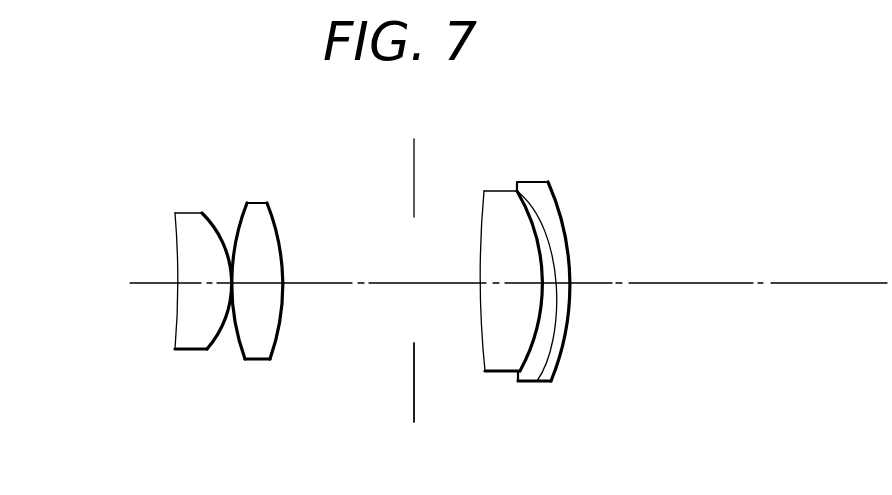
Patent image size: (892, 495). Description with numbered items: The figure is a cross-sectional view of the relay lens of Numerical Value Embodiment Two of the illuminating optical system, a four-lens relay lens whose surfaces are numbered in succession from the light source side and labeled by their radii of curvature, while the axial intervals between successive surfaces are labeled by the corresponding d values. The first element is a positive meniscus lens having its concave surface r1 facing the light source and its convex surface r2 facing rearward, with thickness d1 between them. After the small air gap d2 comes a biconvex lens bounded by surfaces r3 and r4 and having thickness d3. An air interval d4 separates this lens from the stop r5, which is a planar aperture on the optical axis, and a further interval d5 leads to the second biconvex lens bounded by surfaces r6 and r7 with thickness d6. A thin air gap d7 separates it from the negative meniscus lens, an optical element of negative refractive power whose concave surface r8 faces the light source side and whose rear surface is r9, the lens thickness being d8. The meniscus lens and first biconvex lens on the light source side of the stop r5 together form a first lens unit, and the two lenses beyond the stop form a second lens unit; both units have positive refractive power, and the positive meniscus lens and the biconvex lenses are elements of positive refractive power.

The interval from the first surface to the second surface d1 is at (195, 282).
The interval from the second surface to the third surface d2 is at (230, 263).
The interval from the third surface to the fourth surface d3 is at (254, 282).
The interval from the fourth surface to the fifth surface d4 is at (327, 282).
The interval from the fifth surface to the sixth surface d5 is at (442, 282).
The interval from the sixth surface to the seventh surface d6 is at (515, 282).
The interval from the seventh surface to the eighth surface d7 is at (547, 282).
The interval from the eighth surface to the ninth surface d8 is at (560, 280).
The radius of curvature of the first surface r1 is at (177, 318).
The radius of curvature of the second surface r2 is at (215, 347).
The radius of curvature of the third surface r3 is at (240, 347).
The radius of curvature of the fourth surface r4 is at (275, 345).
The radius of curvature of the fifth surface r5 is at (412, 392).
The radius of curvature of the sixth surface r6 is at (484, 352).
The radius of curvature of the seventh surface r7 is at (523, 355).
The radius of curvature of the eighth surface r8 is at (534, 355).
The radius of curvature of the ninth surface r9 is at (560, 357).